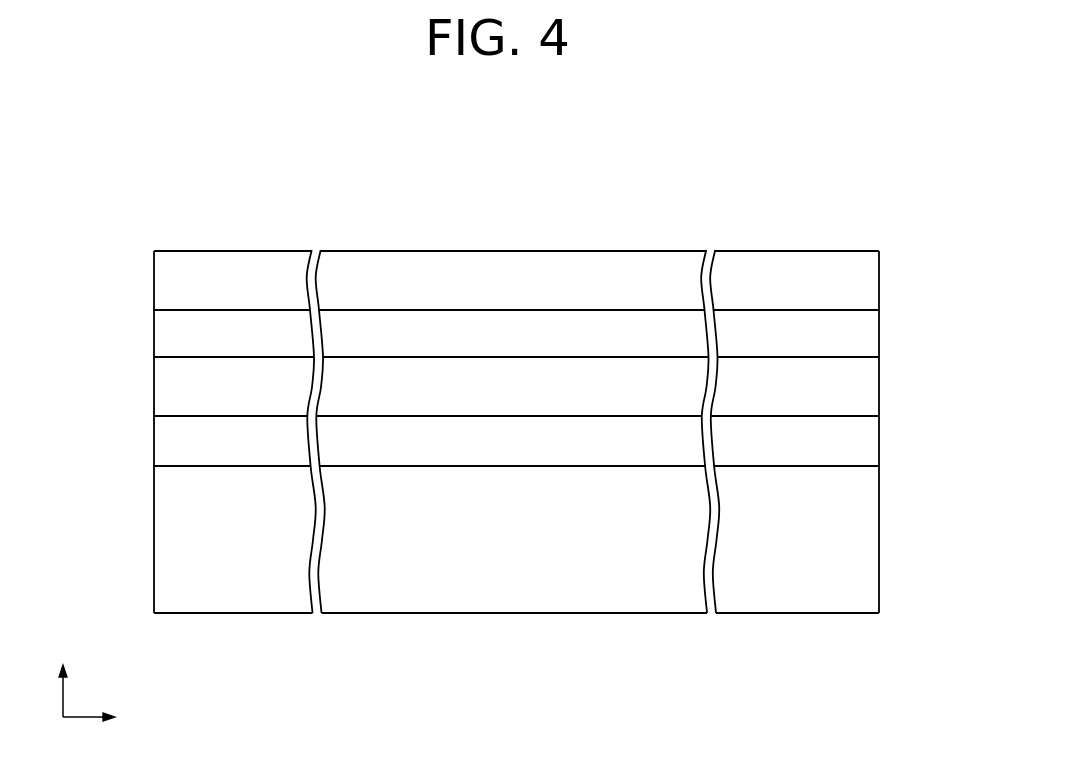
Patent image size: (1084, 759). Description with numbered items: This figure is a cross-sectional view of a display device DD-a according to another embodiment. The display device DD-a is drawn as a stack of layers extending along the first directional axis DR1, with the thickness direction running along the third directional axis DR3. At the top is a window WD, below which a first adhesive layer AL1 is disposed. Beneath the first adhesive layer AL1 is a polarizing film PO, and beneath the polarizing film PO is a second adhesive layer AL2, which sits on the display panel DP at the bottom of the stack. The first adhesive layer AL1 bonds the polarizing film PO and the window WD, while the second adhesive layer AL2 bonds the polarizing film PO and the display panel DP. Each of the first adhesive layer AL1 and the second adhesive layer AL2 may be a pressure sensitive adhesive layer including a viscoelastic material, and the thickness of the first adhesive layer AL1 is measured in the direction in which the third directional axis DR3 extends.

The display device DD-a is at (817, 173).
The window WD is at (867, 282).
The first adhesive layer AL1 is at (867, 336).
The polarizing film PO is at (867, 389).
The second adhesive layer AL2 is at (867, 442).
The display panel DP is at (867, 536).
The first directional axis DR1 is at (110, 718).
The third directional axis DR3 is at (64, 679).